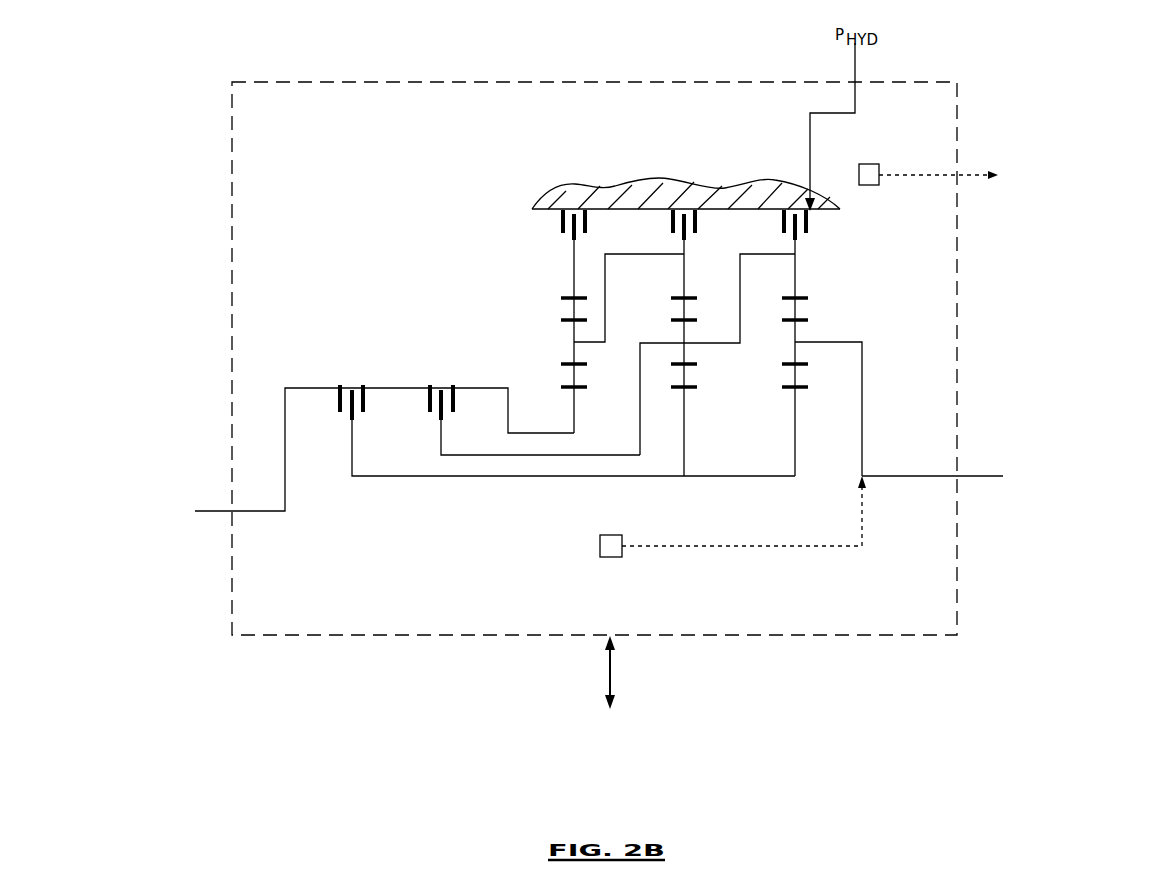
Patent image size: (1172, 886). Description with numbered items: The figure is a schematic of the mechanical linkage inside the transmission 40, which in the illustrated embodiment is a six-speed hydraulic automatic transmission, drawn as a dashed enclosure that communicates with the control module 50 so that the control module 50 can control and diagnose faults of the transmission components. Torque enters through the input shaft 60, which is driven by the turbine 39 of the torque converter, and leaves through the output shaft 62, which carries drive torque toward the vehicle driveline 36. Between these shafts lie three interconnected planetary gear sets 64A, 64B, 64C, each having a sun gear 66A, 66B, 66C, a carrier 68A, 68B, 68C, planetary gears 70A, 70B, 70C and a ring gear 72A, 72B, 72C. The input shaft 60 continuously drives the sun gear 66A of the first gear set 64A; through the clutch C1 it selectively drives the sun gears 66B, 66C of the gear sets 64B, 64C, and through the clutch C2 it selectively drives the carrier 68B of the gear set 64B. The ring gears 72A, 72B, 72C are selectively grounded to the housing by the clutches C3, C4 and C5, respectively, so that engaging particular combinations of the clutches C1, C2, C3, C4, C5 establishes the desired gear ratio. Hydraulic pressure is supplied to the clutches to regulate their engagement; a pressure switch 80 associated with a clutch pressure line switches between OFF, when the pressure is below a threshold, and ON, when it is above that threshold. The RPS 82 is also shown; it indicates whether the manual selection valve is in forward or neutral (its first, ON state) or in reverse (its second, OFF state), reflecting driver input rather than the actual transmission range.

The transmission 40 is at (593, 70).
The control module 50 is at (609, 686).
The input shaft 60 is at (257, 512).
The output shaft 62 is at (895, 475).
The turbine 39 is at (125, 512).
The vehicle driveline 36 is at (1069, 474).
The pressure switch 80 is at (868, 164).
The RPS 82 is at (600, 546).
The first planetary gear set 64A is at (516, 334).
The second planetary gear set 64B is at (696, 358).
The third planetary gear set 64C is at (846, 355).
The sun gear 66A is at (566, 385).
The sun gear 66B is at (690, 390).
The sun gear 66C is at (798, 390).
The carrier 68A is at (602, 344).
The carrier 68B is at (722, 343).
The carrier 68C is at (830, 343).
The planetary gears 70A is at (568, 354).
The planetary gears 70B is at (680, 332).
The planetary gears 70C is at (798, 333).
The ring gear 72A is at (555, 287).
The ring gear 72B is at (682, 296).
The ring gear 72C is at (803, 296).
The clutch C1 is at (338, 398).
The clutch C2 is at (428, 398).
The clutch C3 is at (560, 221).
The clutch C4 is at (670, 222).
The clutch C5 is at (782, 222).